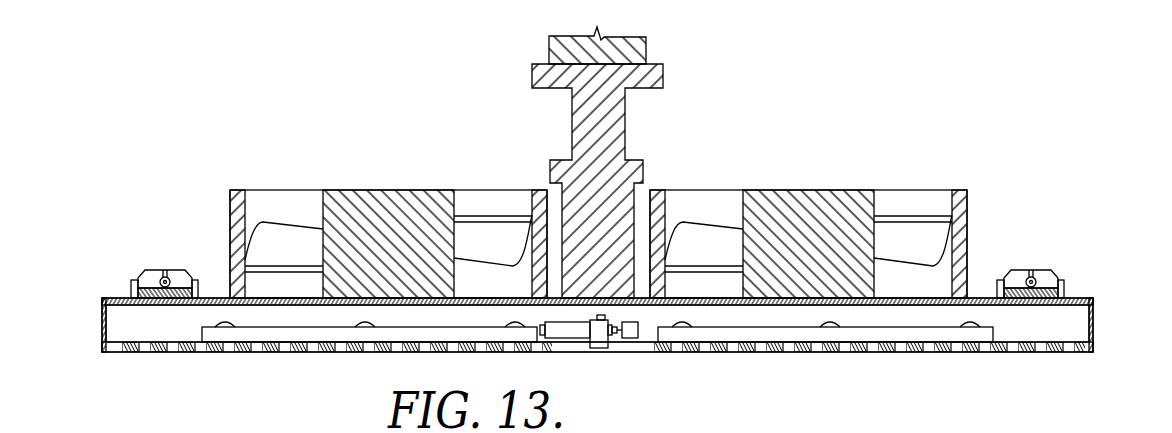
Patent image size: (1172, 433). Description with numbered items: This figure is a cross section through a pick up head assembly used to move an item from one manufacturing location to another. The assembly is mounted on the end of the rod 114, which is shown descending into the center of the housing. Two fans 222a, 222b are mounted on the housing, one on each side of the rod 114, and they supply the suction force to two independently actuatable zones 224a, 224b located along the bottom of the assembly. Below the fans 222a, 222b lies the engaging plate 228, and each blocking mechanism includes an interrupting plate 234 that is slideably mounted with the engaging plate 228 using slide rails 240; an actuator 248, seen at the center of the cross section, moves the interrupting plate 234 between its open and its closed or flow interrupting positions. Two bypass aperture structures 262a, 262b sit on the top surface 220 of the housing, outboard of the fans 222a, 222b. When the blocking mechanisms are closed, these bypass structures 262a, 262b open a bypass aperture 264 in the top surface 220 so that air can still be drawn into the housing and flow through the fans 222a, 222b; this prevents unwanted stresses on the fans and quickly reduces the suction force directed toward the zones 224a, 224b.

The rod 114 is at (549, 45).
The top surface 220 is at (115, 298).
The fan 222a is at (382, 190).
The fan 222b is at (802, 190).
The zone 224a is at (363, 355).
The zone 224b is at (830, 355).
The engaging plate 228 is at (1080, 352).
The interrupting plate 234 is at (147, 340).
The slide rails 240 is at (297, 335).
The actuator 248 is at (572, 330).
The bypass aperture structure 262a is at (156, 270).
The bypass aperture structure 262b is at (1031, 270).
The bypass aperture 264 is at (182, 302).